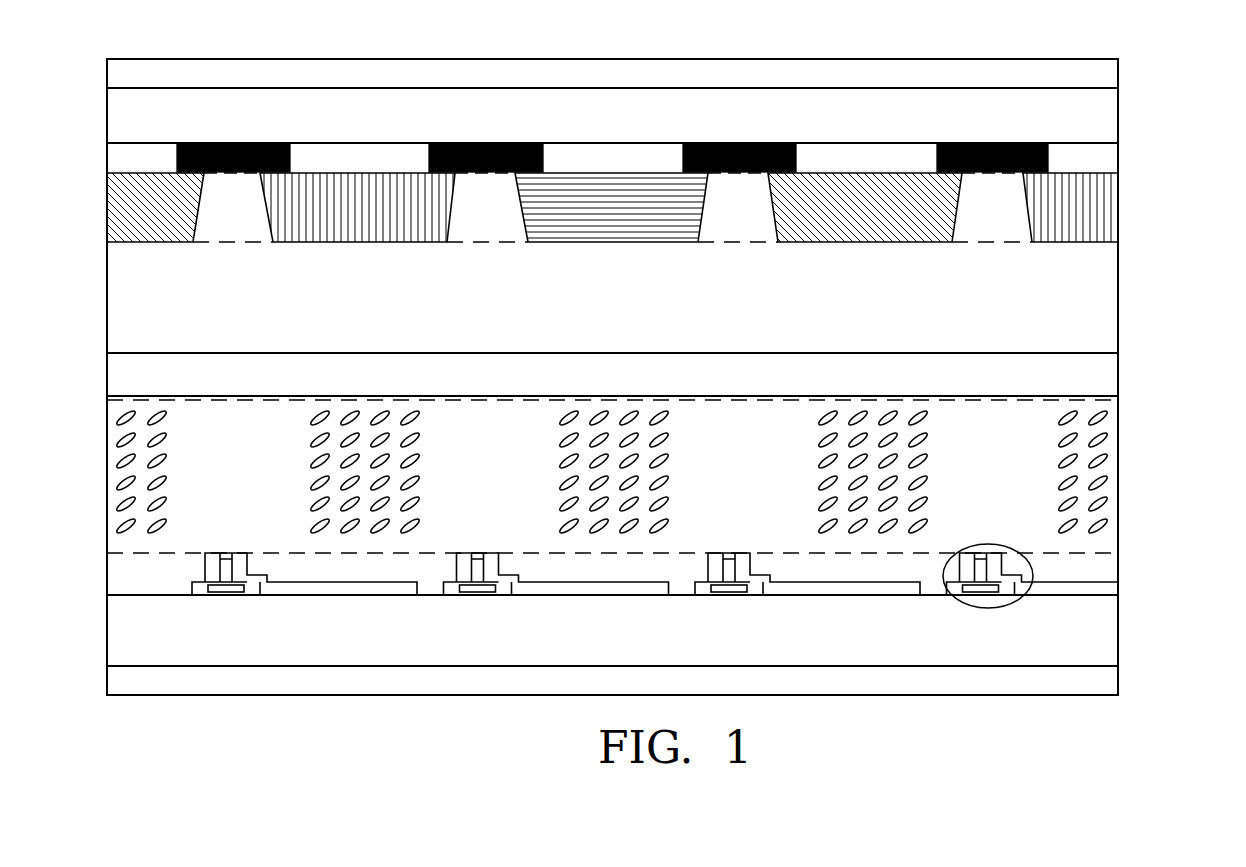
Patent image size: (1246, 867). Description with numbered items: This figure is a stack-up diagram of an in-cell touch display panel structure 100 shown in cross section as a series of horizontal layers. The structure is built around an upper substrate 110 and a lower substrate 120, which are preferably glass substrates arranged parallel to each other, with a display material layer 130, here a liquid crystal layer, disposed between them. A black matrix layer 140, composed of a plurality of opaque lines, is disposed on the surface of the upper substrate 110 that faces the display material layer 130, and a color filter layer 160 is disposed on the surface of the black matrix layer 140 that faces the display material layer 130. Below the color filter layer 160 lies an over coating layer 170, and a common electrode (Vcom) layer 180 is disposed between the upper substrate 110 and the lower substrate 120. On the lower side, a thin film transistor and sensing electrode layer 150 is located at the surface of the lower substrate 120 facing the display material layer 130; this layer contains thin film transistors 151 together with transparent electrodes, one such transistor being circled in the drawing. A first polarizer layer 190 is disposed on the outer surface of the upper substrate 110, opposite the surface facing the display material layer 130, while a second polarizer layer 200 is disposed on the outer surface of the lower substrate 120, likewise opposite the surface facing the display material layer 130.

The in-cell touch display panel structure 100 is at (236, 43).
The upper substrate 110 is at (1103, 108).
The lower substrate 120 is at (1103, 636).
The display material layer 130 is at (1097, 465).
The black matrix layer 140 is at (1097, 152).
The thin film transistor and sensing electrode layer 150 is at (1090, 570).
The thin film transistor 151 is at (987, 607).
The color filter layer 160 is at (1075, 213).
The over coating layer 170 is at (1088, 278).
The common electrode (Vcom) layer 180 is at (1053, 375).
The first polarizer layer 190 is at (1103, 73).
The second polarizer layer 200 is at (1103, 683).